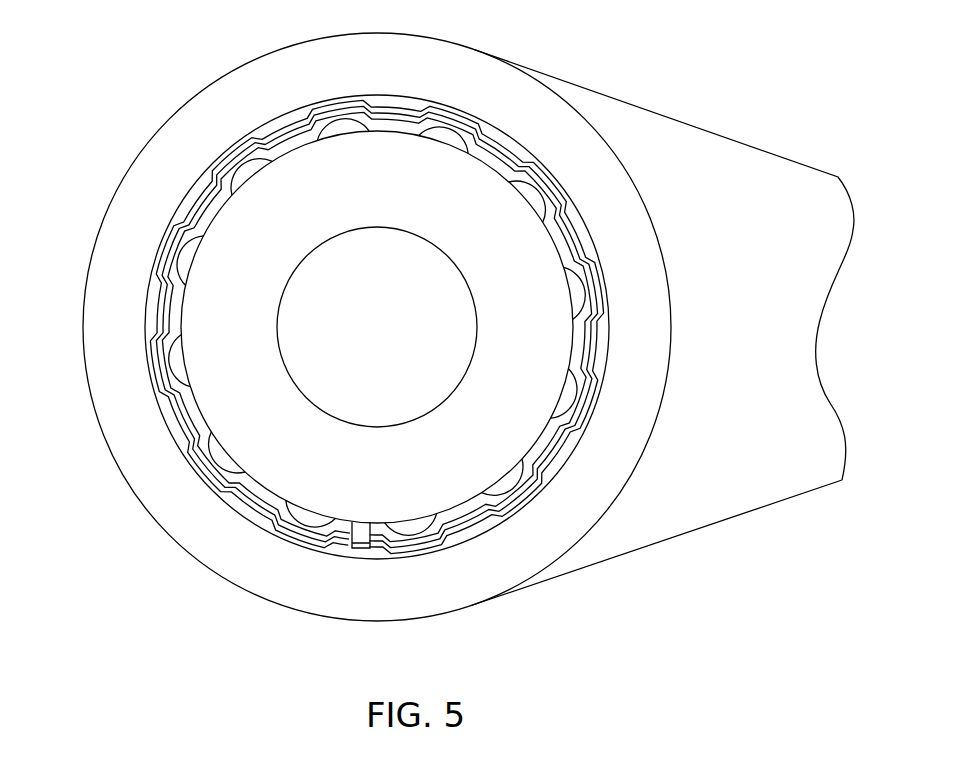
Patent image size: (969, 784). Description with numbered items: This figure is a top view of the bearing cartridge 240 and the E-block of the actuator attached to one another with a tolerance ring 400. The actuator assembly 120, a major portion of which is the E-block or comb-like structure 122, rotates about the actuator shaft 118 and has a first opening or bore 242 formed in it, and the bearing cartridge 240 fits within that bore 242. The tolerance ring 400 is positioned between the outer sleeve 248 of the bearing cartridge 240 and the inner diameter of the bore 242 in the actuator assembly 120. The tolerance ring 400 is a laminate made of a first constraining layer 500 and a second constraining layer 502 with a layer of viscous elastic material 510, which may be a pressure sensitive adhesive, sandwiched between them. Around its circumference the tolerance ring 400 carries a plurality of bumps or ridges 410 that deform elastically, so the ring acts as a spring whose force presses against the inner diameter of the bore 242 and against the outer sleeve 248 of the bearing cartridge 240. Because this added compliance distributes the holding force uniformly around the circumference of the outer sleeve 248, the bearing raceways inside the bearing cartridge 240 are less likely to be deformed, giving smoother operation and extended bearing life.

The actuator shaft 118 is at (343, 407).
The actuator assembly 120 is at (790, 486).
The comb-like structure 122 is at (700, 517).
The bearing cartridge 240 is at (540, 428).
The bore 242 is at (170, 418).
The outer sleeve 248 is at (473, 490).
The tolerance ring 400 is at (587, 253).
The bumps or ridges 410 is at (607, 290).
The first constraining layer 500 is at (538, 166).
The second constraining layer 502 is at (460, 127).
The layer of viscous elastic material 510 is at (578, 217).